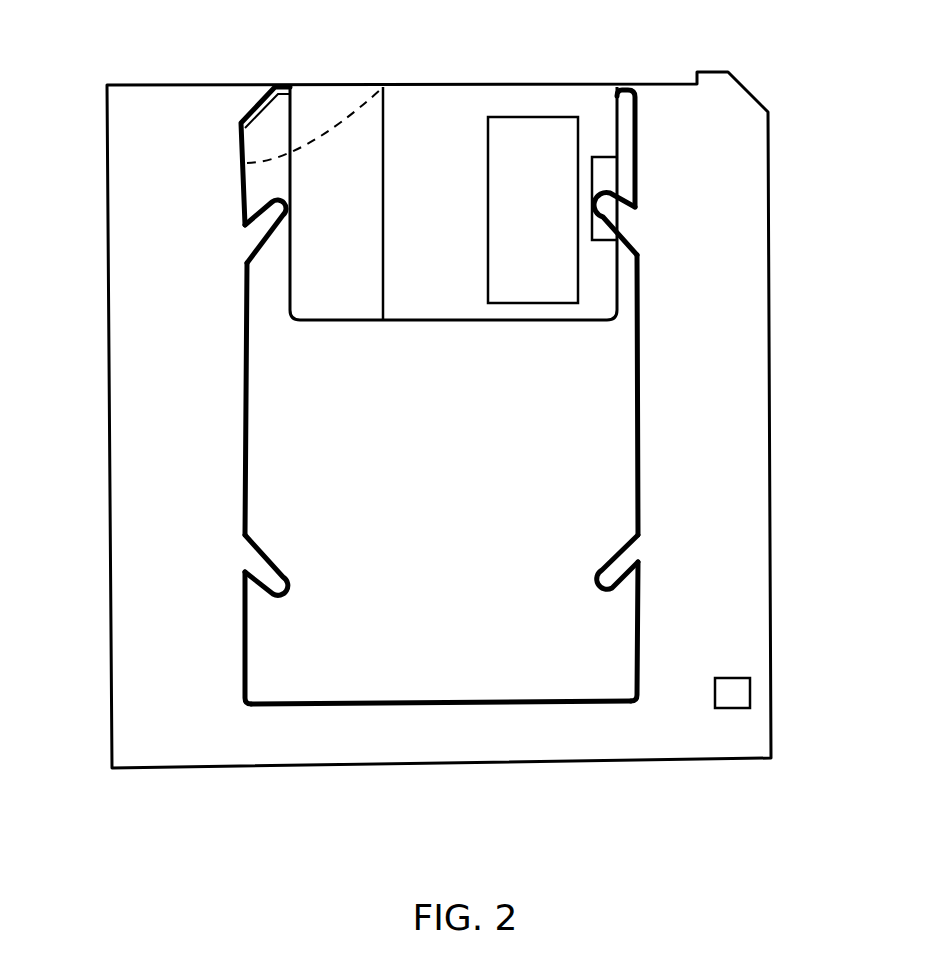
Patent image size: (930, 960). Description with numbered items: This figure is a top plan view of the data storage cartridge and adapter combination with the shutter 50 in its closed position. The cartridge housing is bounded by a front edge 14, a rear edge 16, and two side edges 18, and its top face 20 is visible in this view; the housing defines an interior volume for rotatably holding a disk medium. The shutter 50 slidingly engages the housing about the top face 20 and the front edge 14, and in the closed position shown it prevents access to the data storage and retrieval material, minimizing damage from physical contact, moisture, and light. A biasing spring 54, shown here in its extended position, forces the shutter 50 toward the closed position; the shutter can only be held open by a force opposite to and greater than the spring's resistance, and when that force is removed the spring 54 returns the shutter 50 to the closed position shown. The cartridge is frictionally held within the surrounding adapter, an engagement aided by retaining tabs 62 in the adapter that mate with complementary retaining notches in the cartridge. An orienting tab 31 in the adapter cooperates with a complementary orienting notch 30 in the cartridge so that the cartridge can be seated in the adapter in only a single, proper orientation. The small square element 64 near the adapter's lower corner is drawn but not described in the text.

The front edge 14 is at (344, 87).
The rear edge 16 is at (455, 708).
The side edges 18 is at (640, 398).
The top face 20 is at (412, 497).
The orienting notch 30 is at (266, 92).
The orienting tab 31 is at (250, 92).
The shutter 50 is at (450, 138).
The biasing spring 54 is at (358, 117).
The retaining tabs 62 is at (608, 207).
The opening 64 is at (732, 695).